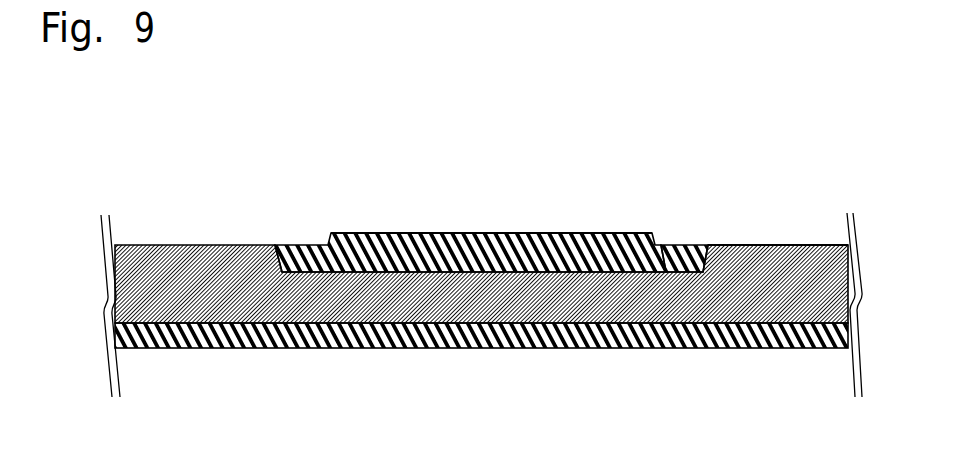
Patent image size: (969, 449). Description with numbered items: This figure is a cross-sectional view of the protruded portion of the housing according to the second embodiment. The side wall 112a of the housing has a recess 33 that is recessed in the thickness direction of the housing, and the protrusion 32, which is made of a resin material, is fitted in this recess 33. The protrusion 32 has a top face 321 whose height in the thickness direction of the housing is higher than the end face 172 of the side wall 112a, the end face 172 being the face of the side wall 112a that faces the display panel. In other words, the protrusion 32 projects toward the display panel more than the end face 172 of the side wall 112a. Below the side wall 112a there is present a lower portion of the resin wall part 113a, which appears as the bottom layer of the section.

The end face 172 is at (202, 245).
The protrusion 32 is at (547, 233).
The top face 321 is at (443, 233).
The recess 33 is at (677, 246).
The side wall 112a is at (738, 245).
The resin wall part 113a is at (647, 348).